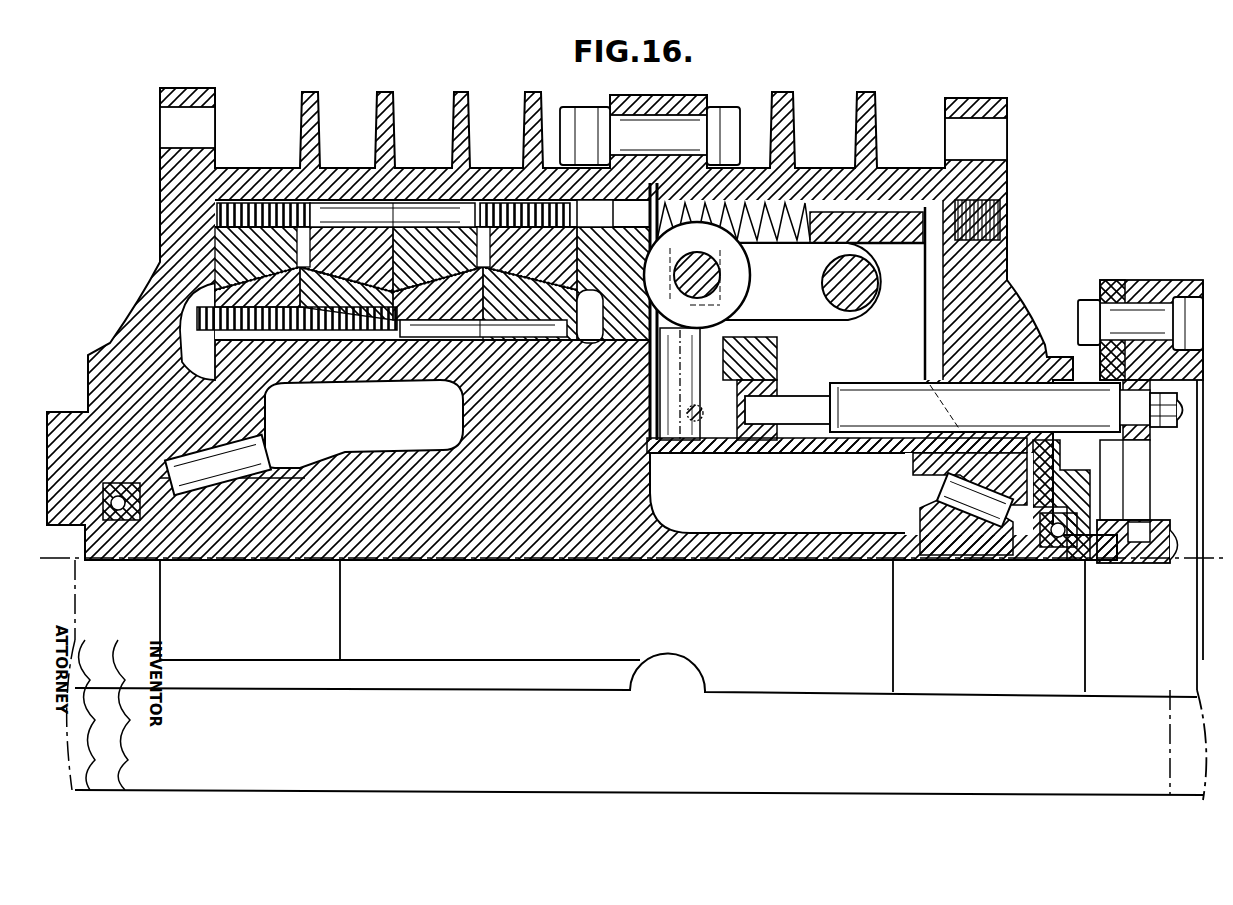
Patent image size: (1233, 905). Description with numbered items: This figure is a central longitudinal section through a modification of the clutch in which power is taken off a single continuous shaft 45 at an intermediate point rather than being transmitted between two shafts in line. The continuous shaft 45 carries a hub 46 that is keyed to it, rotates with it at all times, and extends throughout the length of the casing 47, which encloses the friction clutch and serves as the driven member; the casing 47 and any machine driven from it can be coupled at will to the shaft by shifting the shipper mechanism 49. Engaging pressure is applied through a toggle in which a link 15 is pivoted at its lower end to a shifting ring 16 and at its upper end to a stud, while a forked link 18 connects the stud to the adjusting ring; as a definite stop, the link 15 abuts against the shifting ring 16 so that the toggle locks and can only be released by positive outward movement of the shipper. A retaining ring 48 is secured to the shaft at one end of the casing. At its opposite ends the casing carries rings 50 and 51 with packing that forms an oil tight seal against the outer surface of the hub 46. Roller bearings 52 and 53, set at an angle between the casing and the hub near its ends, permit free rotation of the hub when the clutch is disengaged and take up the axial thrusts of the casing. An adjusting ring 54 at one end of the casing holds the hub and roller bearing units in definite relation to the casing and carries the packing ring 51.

The link 15 is at (660, 360).
The shifting ring 16 is at (740, 356).
The link 18 is at (770, 284).
The continuous shaft 45 is at (67, 550).
The hub 46 is at (370, 467).
The casing 47 is at (248, 185).
The retaining ring 48 is at (1163, 530).
The shipper mechanism 49 is at (1187, 423).
The ring 50 is at (132, 517).
The packing ring 51 is at (1043, 557).
The roller bearing 52 is at (245, 503).
The roller bearing 53 is at (983, 507).
The adjusting ring 54 is at (1067, 503).